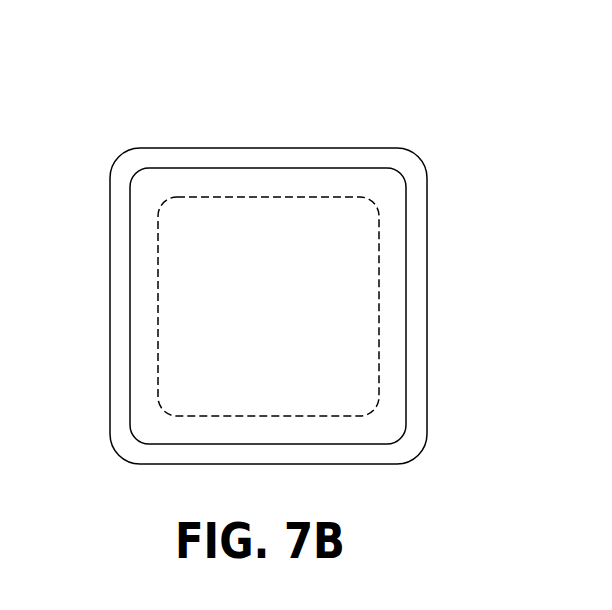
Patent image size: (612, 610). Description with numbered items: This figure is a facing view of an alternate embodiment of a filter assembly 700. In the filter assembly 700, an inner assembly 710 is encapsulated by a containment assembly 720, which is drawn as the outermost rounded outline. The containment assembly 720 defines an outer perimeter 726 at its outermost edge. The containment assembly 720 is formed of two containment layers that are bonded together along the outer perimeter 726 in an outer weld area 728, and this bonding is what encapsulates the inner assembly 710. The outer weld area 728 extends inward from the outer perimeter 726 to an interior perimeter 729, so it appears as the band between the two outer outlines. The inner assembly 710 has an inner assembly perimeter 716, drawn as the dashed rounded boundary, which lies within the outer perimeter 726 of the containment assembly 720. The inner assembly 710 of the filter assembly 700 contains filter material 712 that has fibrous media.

The filter assembly 700 is at (208, 84).
The inner assembly 710 is at (382, 248).
The filter material 712 is at (325, 212).
The inner assembly perimeter 716 is at (237, 197).
The containment assembly 720 is at (427, 362).
The outer perimeter 726 is at (427, 390).
The outer weld area 728 is at (390, 450).
The interior perimeter 729 is at (130, 399).